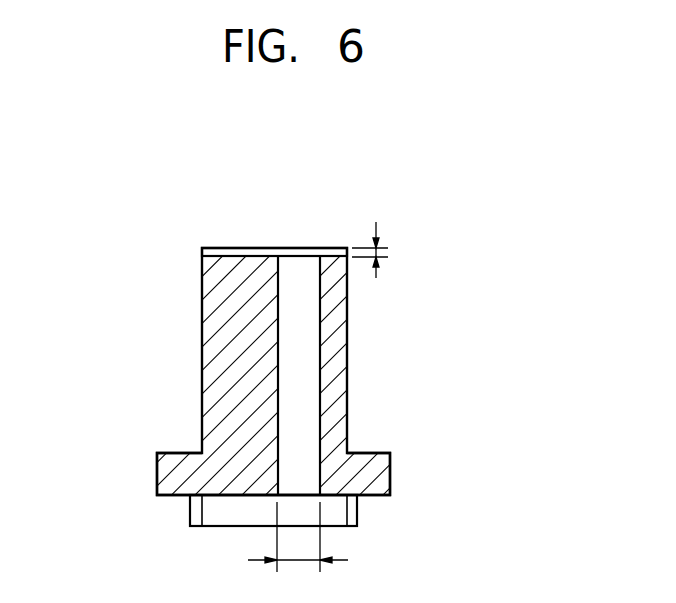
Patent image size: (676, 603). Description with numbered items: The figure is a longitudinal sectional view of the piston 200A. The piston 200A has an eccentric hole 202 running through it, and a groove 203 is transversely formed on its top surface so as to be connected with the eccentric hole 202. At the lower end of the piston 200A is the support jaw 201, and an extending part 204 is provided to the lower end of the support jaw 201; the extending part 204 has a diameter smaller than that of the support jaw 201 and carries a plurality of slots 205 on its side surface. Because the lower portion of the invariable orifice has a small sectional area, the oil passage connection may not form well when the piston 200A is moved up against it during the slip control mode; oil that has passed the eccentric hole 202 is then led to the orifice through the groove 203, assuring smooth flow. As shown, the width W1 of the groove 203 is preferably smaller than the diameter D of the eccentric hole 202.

The piston 200A is at (165, 360).
The support jaw 201 is at (380, 475).
The eccentric hole 202 is at (308, 300).
The groove 203 is at (310, 252).
The extending part 204 is at (352, 510).
The slots 205 is at (190, 512).
The width of the groove W1 is at (389, 250).
The diameter of the eccentric hole D is at (298, 537).